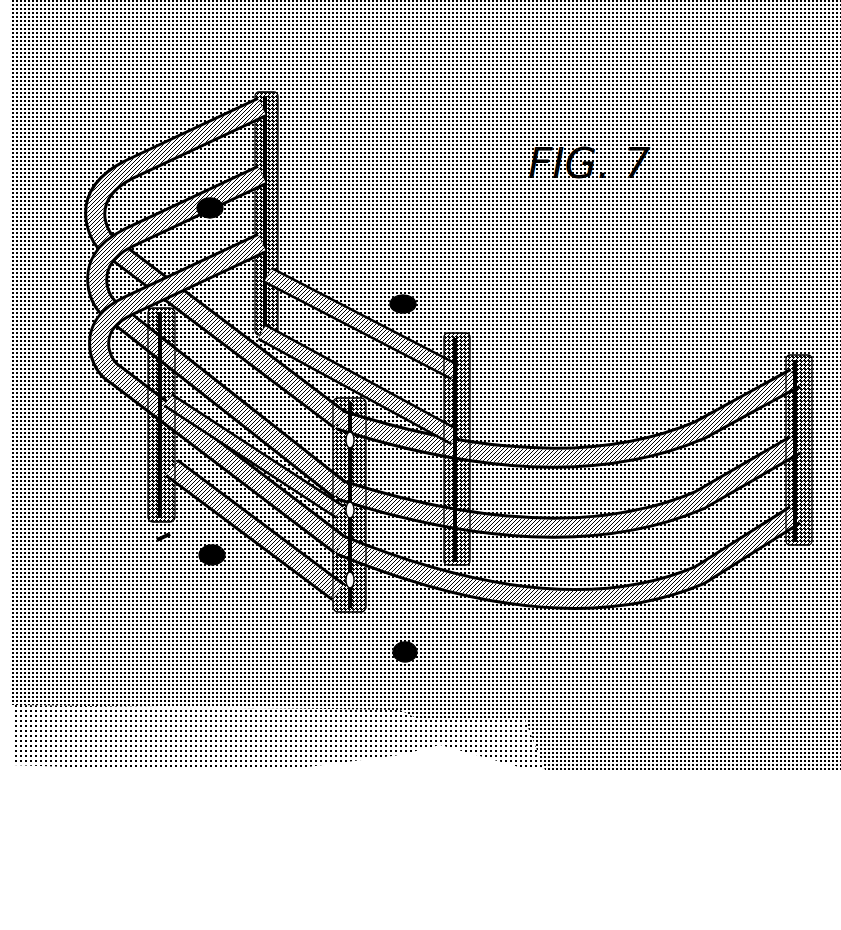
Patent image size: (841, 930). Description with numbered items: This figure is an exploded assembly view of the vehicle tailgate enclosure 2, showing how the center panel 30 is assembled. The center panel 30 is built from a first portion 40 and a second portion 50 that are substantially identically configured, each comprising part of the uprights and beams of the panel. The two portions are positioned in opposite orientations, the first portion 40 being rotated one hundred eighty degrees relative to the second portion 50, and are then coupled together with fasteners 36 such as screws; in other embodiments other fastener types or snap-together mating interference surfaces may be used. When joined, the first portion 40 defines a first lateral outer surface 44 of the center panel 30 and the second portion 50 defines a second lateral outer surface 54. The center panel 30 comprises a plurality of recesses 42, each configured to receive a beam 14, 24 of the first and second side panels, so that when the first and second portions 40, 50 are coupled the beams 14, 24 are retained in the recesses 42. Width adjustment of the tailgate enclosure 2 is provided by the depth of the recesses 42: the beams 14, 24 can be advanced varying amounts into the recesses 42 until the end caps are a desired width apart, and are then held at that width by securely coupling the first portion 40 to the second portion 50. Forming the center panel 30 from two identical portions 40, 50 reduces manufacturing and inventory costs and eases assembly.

The vehicle tailgate enclosure 2 is at (426, 145).
The beams 14 is at (600, 466).
The beams 24 is at (104, 298).
The center panel 30 is at (425, 288).
The fasteners 36 is at (445, 326).
The first portion 40 is at (243, 548).
The recesses 42 is at (297, 267).
The first lateral outer surface 44 is at (352, 610).
The second portion 50 is at (350, 308).
The second lateral outer surface 54 is at (277, 180).